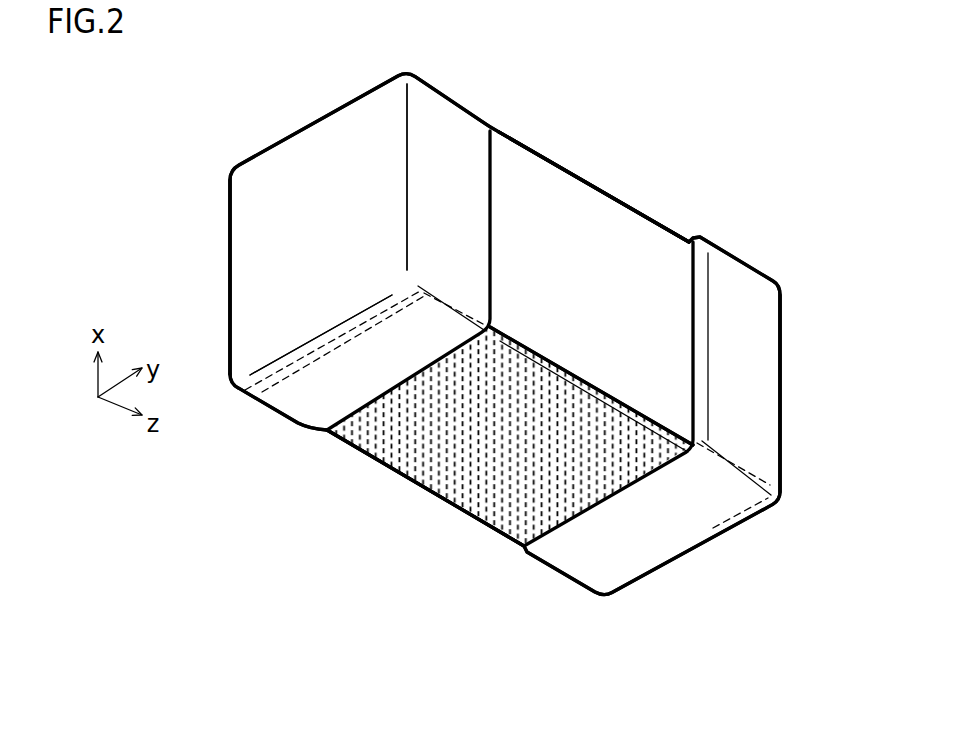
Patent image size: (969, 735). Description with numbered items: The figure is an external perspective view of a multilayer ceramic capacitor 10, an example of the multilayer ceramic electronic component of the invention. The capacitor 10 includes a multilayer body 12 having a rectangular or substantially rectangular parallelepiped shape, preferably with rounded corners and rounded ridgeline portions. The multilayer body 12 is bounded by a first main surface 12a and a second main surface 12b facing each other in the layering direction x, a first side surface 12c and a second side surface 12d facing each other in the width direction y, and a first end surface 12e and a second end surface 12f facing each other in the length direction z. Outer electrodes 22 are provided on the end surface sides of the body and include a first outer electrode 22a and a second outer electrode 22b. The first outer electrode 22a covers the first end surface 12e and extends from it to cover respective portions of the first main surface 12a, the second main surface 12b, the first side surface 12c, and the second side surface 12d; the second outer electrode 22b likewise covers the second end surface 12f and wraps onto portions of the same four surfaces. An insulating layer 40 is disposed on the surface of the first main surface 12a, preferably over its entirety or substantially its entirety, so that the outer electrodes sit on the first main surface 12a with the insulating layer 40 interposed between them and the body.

The multilayer ceramic capacitor 10 is at (192, 131).
The multilayer body 12 is at (583, 180).
The first main surface 12a is at (433, 460).
The second main surface 12b is at (528, 170).
The first side surface 12c is at (633, 240).
The second side surface 12d is at (400, 433).
The first end surface 12e is at (250, 247).
The second end surface 12f is at (770, 346).
The outer electrodes 22 is at (167, 490).
The first outer electrode 22a is at (334, 106).
The second outer electrode 22b is at (743, 257).
The insulating layer 40 is at (289, 392).